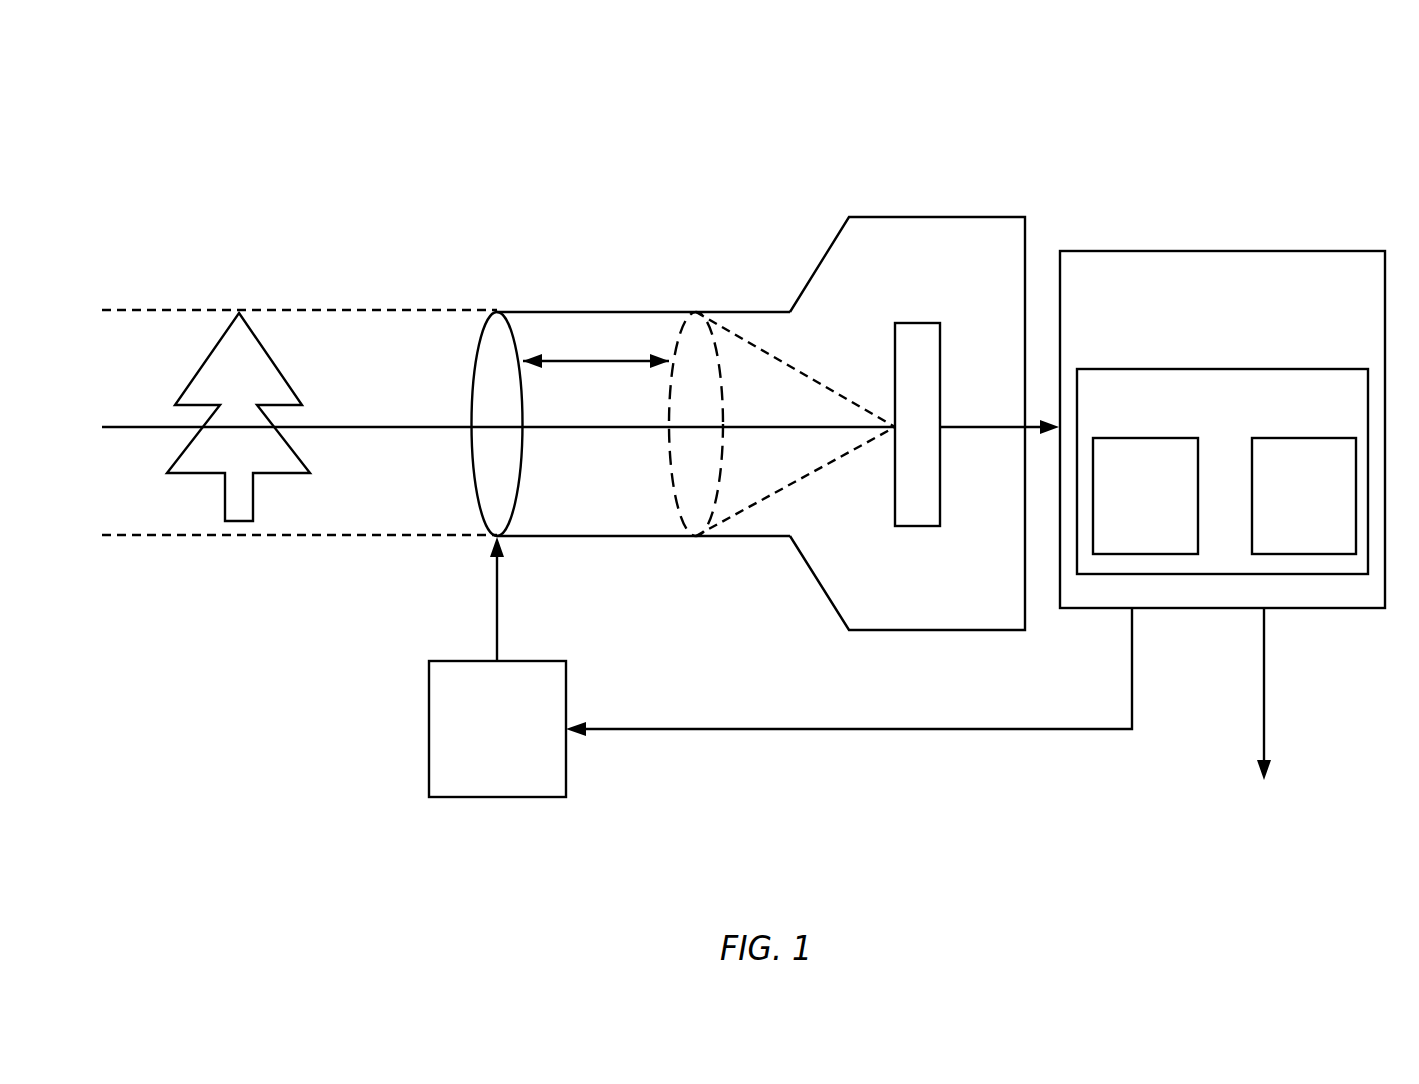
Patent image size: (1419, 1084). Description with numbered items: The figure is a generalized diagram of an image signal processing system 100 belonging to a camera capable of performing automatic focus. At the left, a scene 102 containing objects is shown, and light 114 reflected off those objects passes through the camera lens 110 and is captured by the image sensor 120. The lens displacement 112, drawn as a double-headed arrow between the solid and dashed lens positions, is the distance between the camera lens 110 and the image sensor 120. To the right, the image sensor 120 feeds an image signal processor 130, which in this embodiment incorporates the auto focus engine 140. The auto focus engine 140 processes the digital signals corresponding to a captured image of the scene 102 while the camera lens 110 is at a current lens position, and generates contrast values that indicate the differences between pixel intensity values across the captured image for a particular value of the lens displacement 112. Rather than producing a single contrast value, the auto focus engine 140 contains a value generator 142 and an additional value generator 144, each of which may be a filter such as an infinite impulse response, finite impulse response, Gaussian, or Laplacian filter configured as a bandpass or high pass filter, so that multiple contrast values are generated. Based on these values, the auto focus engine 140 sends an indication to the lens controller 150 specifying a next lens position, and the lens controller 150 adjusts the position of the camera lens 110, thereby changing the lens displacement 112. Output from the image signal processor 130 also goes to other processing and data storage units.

The image signal processing system 100 is at (1272, 143).
The scene 102 is at (200, 368).
The camera lens 110 is at (482, 334).
The lens displacement 112 is at (623, 361).
The light 114 is at (768, 350).
The image sensor 120 is at (903, 323).
The image signal processor 130 is at (1222, 429).
The auto focus engine 140 is at (1222, 471).
The value generator 142 is at (1145, 496).
The value generator 144 is at (1304, 496).
The lens controller 150 is at (497, 729).